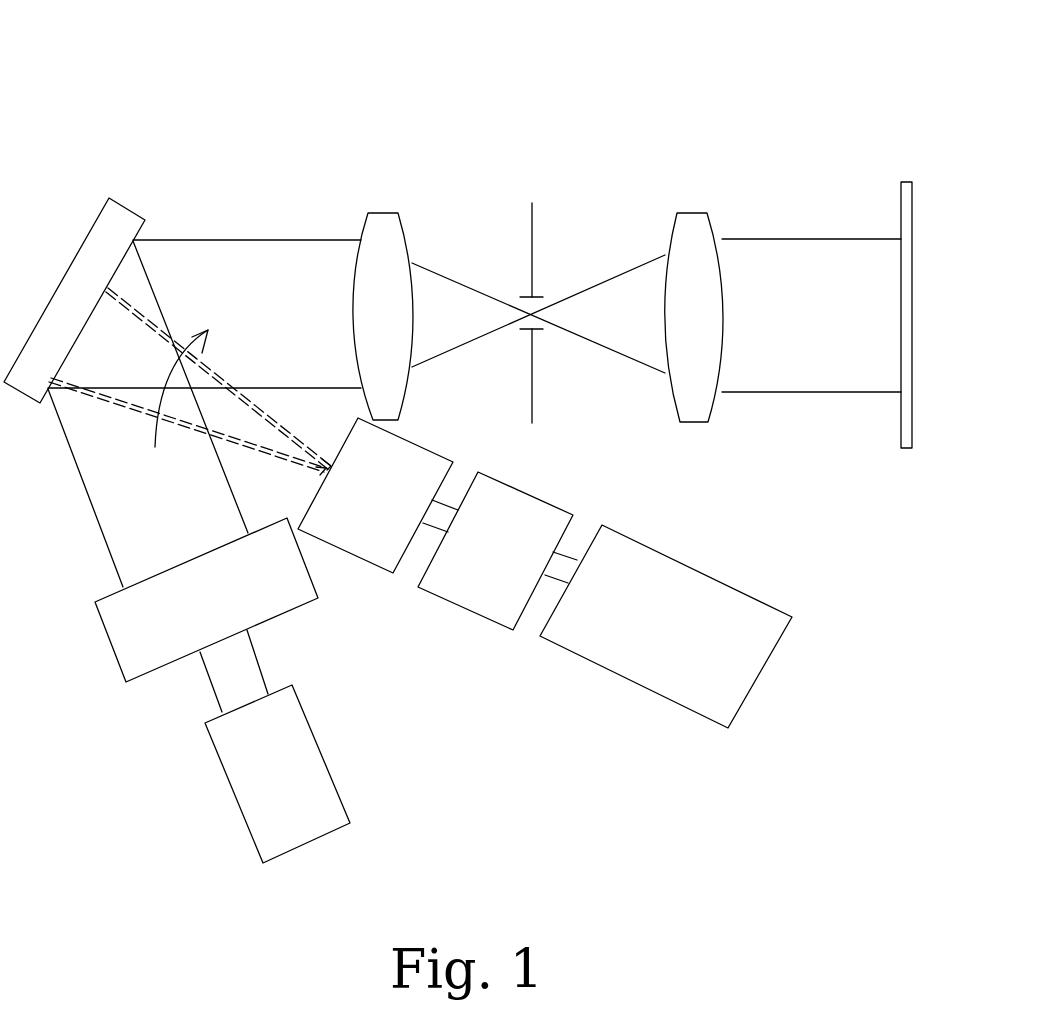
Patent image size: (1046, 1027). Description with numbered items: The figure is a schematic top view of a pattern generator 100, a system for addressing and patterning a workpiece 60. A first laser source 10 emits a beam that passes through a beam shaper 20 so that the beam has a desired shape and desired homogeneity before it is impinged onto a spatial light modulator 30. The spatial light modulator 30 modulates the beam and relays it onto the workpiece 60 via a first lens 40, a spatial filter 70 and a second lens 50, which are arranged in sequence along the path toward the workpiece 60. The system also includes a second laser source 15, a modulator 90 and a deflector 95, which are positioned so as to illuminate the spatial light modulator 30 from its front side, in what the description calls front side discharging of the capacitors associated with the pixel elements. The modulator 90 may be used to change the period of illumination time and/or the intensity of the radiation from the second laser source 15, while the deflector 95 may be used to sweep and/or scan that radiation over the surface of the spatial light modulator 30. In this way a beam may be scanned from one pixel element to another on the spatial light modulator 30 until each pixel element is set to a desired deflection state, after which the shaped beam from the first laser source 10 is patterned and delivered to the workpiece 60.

The pattern generator 100 is at (620, 33).
The first laser source 10 is at (252, 788).
The beam shaper 20 is at (175, 610).
The spatial light modulator 30 is at (102, 248).
The first lens 40 is at (380, 238).
The second lens 50 is at (695, 233).
The workpiece 60 is at (904, 341).
The spatial filter 70 is at (537, 233).
The modulator 90 is at (483, 595).
The deflector 95 is at (358, 533).
The second laser source 15 is at (653, 663).